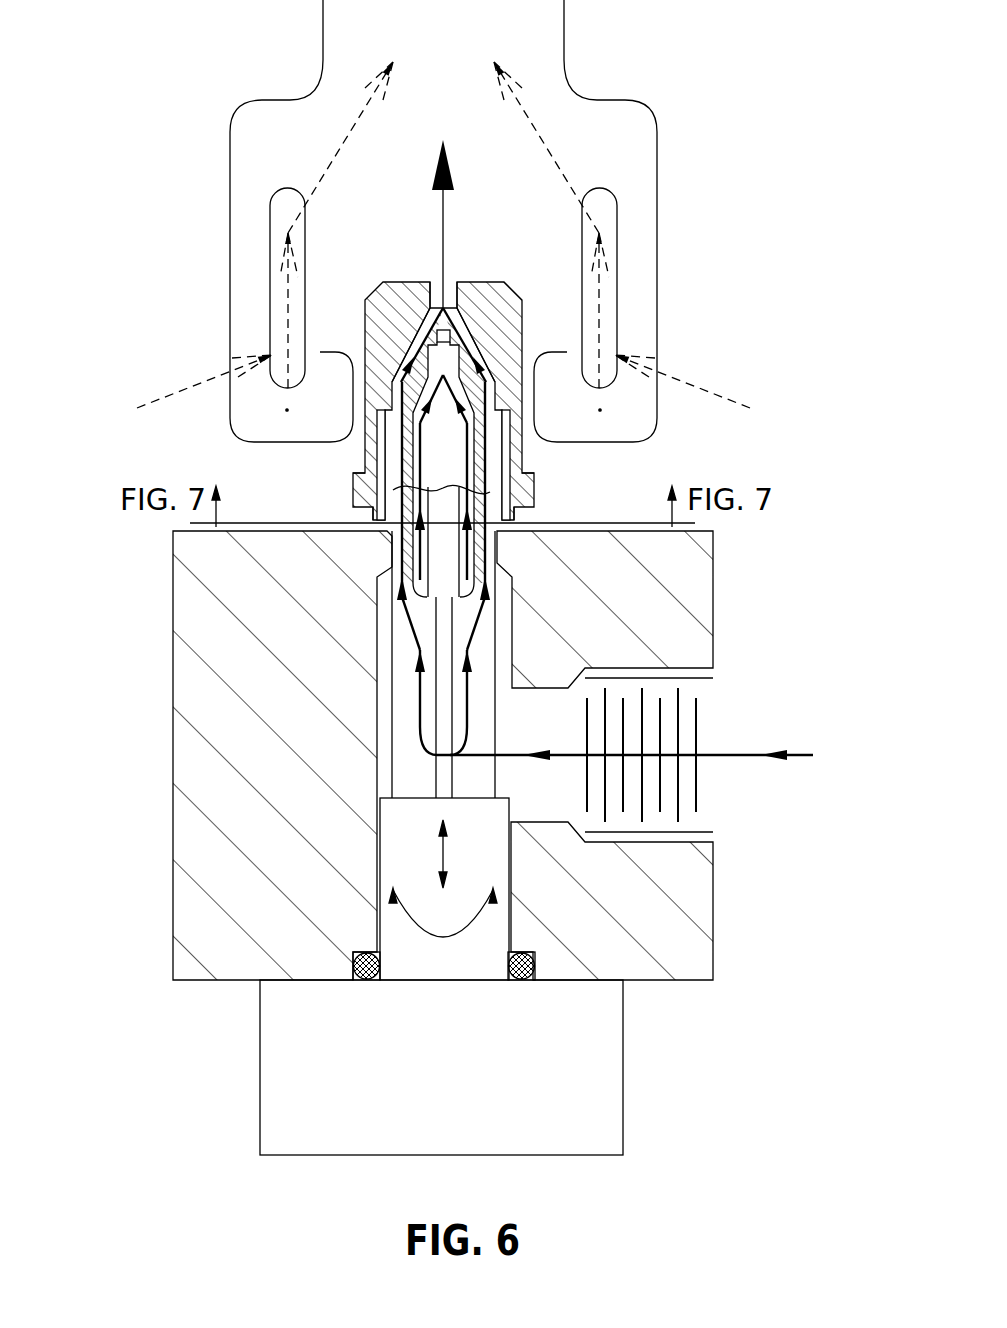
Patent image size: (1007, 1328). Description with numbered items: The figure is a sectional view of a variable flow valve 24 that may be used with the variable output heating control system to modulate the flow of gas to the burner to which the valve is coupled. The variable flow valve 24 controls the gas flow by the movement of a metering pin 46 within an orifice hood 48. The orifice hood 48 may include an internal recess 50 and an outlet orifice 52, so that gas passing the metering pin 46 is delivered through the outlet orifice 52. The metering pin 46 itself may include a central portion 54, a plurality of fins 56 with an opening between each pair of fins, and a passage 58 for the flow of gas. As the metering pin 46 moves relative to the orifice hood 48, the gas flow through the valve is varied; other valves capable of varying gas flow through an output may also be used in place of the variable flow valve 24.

The variable flow valve 24 is at (757, 452).
The metering pin 46 is at (353, 466).
The orifice hood 48 is at (332, 330).
The internal recess 50 is at (562, 234).
The outlet orifice 52 is at (293, 197).
The central portion 54 is at (405, 672).
The fins 56 is at (443, 772).
The passage 58 is at (567, 416).